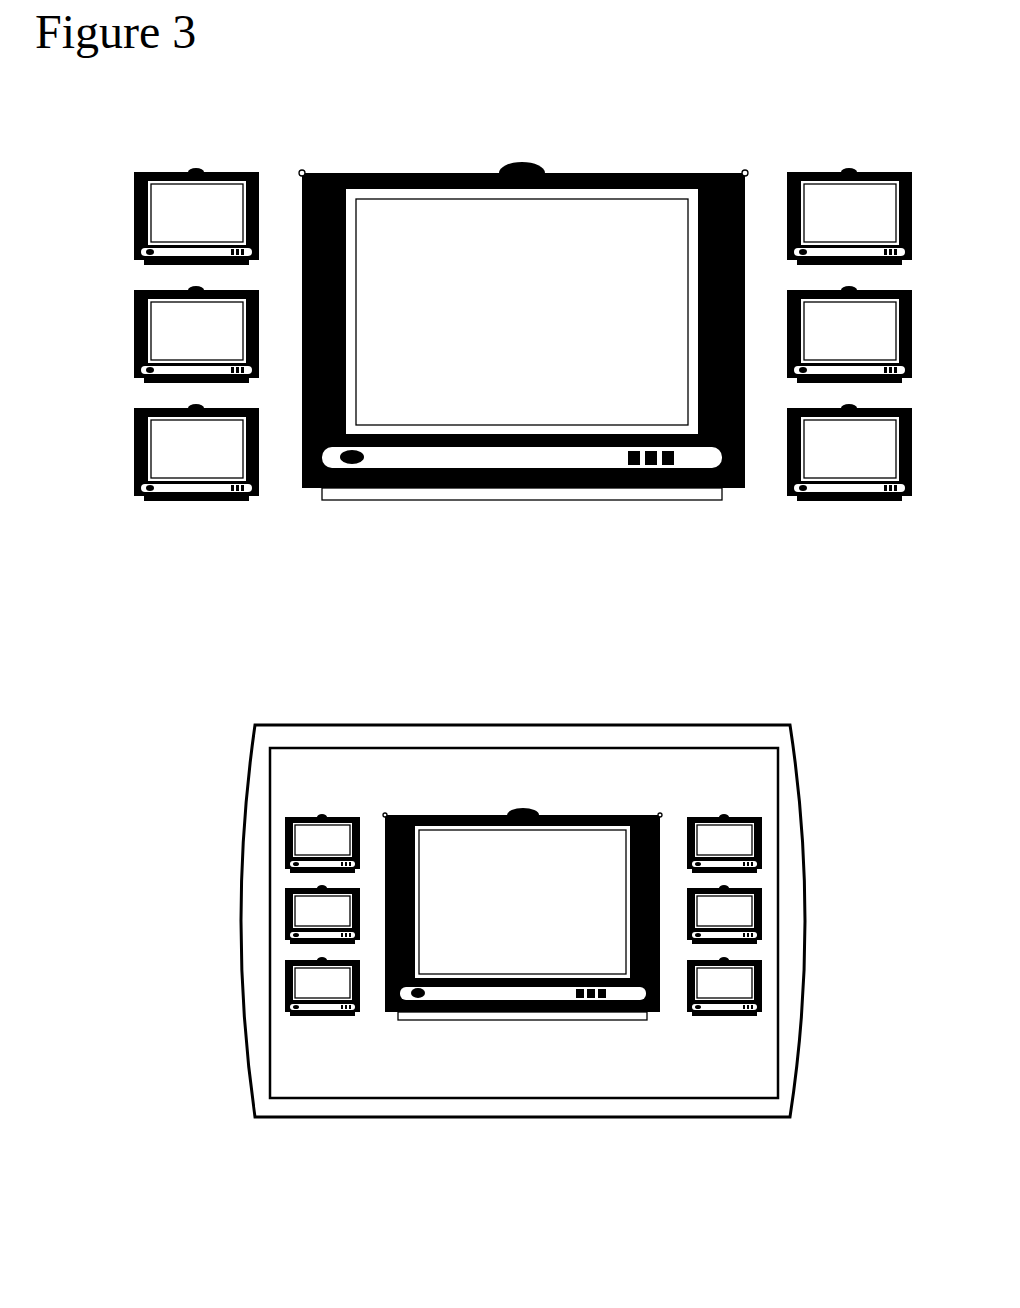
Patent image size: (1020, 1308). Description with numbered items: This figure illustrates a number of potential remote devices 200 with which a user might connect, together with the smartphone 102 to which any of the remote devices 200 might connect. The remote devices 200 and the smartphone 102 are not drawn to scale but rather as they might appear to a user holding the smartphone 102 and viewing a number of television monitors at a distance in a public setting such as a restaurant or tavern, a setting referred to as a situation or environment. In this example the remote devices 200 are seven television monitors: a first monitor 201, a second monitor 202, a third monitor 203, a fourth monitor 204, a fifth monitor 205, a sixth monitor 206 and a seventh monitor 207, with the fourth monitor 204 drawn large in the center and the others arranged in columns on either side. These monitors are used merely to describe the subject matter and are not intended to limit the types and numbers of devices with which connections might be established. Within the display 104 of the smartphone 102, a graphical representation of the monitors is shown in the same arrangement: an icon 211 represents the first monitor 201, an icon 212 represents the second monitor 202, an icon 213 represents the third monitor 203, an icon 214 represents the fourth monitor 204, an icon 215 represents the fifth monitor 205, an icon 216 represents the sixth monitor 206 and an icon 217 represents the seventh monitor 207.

The remote devices 200 is at (486, 112).
The TV_1 201 is at (196, 216).
The TV_2 202 is at (196, 334).
The TV_3 203 is at (196, 452).
The TV_4 204 is at (523, 331).
The TV_5 205 is at (849, 216).
The TV_6 206 is at (849, 334).
The TV_7 207 is at (849, 452).
The smartphone 102 is at (464, 692).
The display 104 is at (578, 776).
The icon 211 is at (322, 843).
The icon 212 is at (322, 914).
The icon 213 is at (322, 986).
The icon 214 is at (522, 914).
The icon 215 is at (724, 843).
The icon 216 is at (724, 914).
The icon 217 is at (724, 986).